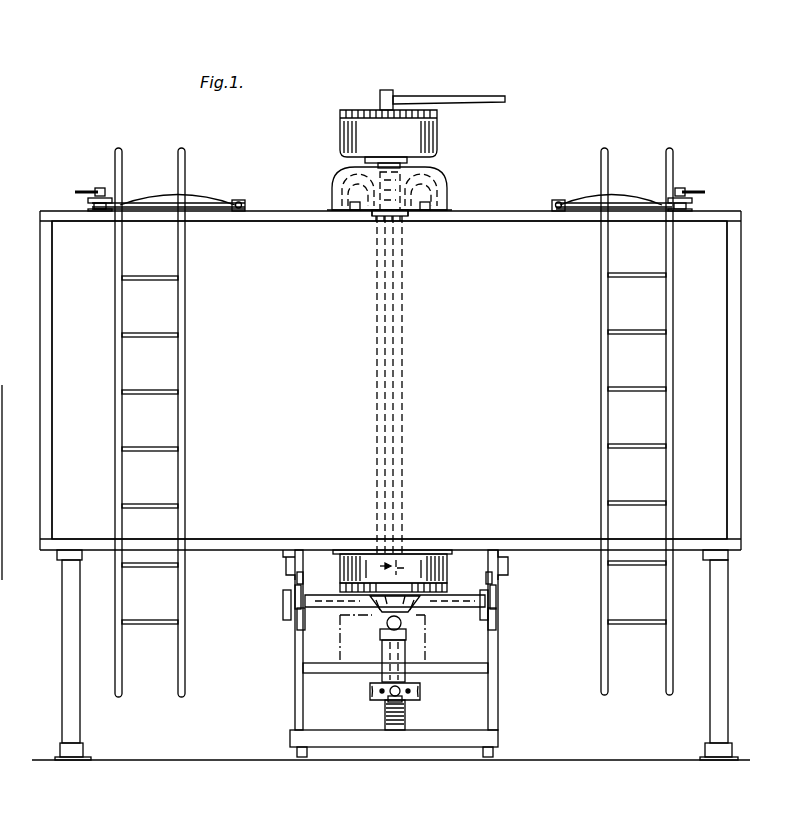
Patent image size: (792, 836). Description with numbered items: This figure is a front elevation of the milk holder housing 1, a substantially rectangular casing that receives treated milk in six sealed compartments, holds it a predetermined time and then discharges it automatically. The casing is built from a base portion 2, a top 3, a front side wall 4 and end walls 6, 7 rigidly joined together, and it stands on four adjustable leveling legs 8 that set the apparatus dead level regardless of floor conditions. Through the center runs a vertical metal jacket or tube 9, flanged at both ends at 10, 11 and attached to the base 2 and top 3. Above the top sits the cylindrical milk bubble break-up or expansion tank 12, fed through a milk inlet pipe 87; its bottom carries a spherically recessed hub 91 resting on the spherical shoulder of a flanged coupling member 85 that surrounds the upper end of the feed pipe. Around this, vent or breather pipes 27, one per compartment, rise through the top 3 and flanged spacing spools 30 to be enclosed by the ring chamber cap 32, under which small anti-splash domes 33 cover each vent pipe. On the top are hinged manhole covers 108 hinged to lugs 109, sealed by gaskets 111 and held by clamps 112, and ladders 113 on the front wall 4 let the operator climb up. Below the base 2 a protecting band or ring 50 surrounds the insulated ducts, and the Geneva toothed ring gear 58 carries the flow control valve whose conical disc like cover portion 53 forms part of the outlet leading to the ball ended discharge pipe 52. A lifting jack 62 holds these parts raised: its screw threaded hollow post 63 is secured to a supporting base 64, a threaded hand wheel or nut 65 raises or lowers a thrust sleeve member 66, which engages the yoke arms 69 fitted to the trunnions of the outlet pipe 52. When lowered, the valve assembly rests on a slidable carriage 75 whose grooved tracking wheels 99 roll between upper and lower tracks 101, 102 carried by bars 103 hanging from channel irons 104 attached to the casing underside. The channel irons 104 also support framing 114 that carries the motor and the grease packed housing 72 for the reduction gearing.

The milk holder housing 1 is at (52, 200).
The base portion 2 is at (208, 550).
The top 3 is at (298, 211).
The front side wall 4 is at (426, 782).
The end wall 6 is at (38, 375).
The end wall 7 is at (742, 378).
The adjustable leveling legs 8 is at (78, 722).
The vertical metal jacket or tube 9 is at (405, 350).
The flange 10 is at (376, 216).
The flange 11 is at (374, 548).
The milk bubble break-up or expansion tank 12 is at (437, 130).
The top vent or breather pipes 27 is at (432, 197).
The flanged spacing spools 30 is at (440, 216).
The ring chamber cap 32 is at (442, 177).
The anti-splash domes 33 is at (340, 187).
The protecting band or ring 50 is at (447, 564).
The ball ended discharge pipe 52 is at (386, 628).
The conical disc like cover portion 53 is at (412, 610).
The Geneva toothed ring gear 58 is at (452, 584).
The lifting jack 62 is at (383, 705).
The screw threaded hollow post 63 is at (406, 714).
The supporting base 64 is at (328, 735).
The threaded hand wheel or nut 65 is at (378, 697).
The thrust sleeve member 66 is at (382, 657).
The yoke arms 69 is at (381, 636).
The grease packed housing 72 is at (427, 648).
The slidable carriage 75 is at (436, 597).
The flanged coupling member 85 is at (376, 161).
The milk inlet pipe 87 is at (380, 96).
The spherically recessed hub 91 is at (408, 160).
The grooved tracking wheel 99 is at (498, 606).
The upper track 101 is at (304, 594).
The lower track 102 is at (304, 618).
The bars 103 is at (294, 600).
The channel irons 104 is at (286, 574).
The hinged covers 108 is at (214, 203).
The lugs 109 is at (241, 200).
The gaskets 111 is at (190, 205).
The clamps 112 is at (94, 188).
The ladders 113 is at (180, 472).
The framing 114 is at (466, 673).